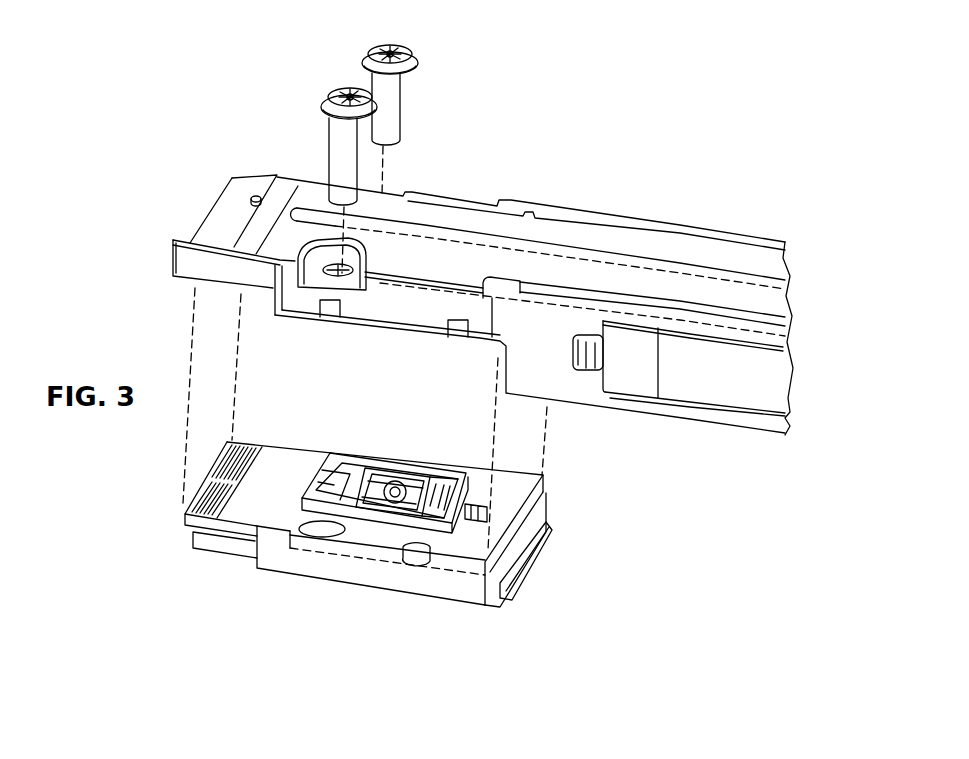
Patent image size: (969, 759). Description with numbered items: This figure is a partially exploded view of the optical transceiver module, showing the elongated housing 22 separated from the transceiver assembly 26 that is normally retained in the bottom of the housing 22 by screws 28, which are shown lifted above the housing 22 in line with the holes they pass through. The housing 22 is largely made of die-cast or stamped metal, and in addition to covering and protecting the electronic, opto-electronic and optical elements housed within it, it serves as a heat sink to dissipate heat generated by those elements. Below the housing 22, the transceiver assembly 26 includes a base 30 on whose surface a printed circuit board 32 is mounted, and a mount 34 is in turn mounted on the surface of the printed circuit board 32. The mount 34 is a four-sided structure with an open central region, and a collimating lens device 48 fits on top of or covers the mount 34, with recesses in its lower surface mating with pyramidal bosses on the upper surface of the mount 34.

The elongated housing 22 is at (589, 212).
The transceiver assembly 26 is at (580, 511).
The screws 28 is at (370, 53).
The base 30 is at (275, 562).
The printed circuit board 32 is at (292, 456).
The mount 34 is at (400, 528).
The collimating lens device 48 is at (443, 525).